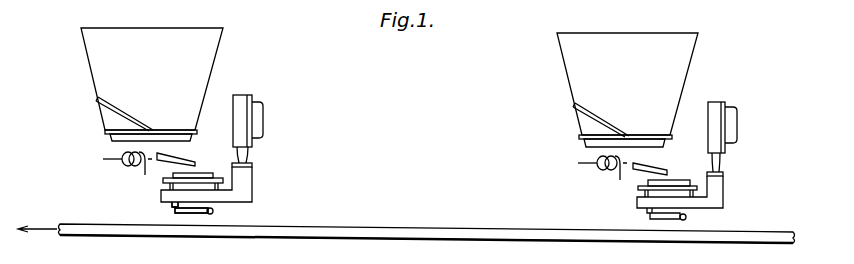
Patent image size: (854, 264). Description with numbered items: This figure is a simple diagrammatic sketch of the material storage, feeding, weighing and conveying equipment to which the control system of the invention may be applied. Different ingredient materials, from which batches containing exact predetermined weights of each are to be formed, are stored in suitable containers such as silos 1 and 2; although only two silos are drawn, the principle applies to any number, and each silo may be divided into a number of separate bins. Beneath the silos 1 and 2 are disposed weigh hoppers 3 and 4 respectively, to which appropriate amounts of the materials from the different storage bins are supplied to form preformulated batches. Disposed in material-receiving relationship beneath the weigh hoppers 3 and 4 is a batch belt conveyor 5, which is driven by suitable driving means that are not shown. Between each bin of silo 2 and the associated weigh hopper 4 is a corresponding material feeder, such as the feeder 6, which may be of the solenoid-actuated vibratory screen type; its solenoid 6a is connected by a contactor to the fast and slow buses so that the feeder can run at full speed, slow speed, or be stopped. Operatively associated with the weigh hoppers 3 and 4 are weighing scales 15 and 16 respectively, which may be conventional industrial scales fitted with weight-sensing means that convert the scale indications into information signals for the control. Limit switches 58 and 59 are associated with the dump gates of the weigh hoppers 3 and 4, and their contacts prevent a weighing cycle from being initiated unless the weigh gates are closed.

The silo 1 is at (93, 58).
The silo 2 is at (569, 62).
The weigh hopper 3 is at (203, 169).
The weigh hopper 4 is at (678, 179).
The batch belt conveyor 5 is at (427, 232).
The material feeder 6 is at (656, 168).
The feeder solenoid 6a is at (605, 177).
The weighing scale 15 is at (244, 94).
The weighing scale 16 is at (720, 102).
The limit switch 58 is at (168, 207).
The limit switch 59 is at (643, 212).